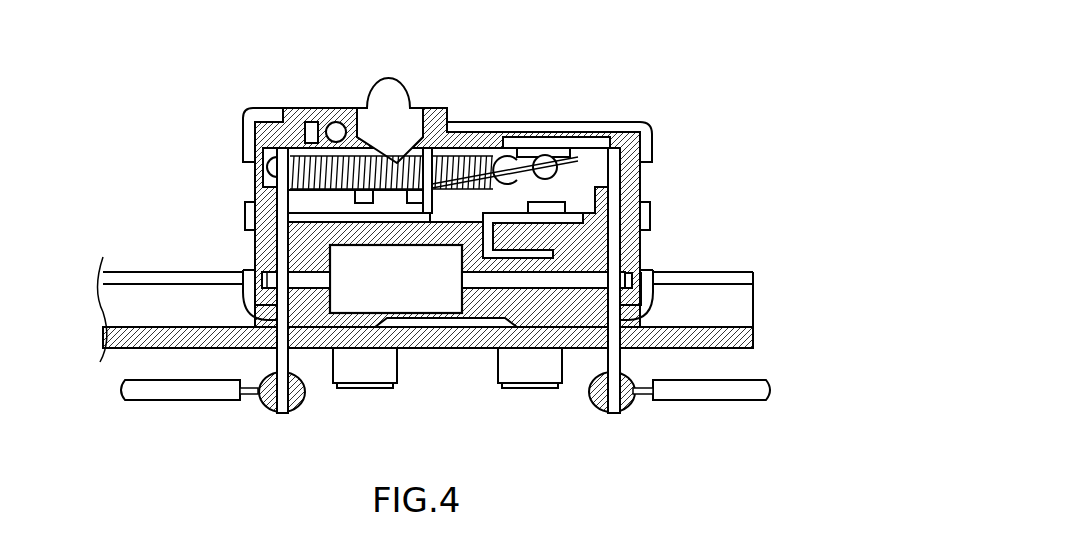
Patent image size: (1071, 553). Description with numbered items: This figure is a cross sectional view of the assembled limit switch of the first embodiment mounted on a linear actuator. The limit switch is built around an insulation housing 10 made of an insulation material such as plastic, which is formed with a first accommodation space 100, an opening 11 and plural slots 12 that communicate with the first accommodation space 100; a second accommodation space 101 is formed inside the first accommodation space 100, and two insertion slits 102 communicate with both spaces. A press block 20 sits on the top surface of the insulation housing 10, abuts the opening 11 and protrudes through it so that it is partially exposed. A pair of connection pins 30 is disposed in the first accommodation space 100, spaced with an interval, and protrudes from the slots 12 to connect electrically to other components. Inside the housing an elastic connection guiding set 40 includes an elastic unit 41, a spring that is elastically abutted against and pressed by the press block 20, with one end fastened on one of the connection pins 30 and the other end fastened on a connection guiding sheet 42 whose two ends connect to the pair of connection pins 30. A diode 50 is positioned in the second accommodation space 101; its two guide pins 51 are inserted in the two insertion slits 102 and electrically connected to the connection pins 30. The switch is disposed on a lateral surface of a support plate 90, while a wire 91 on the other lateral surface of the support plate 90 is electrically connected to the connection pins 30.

The insulation housing 10 is at (577, 118).
The opening 11 is at (430, 108).
The slots 12 is at (290, 297).
The press block 20 is at (388, 98).
The connection pins 30 is at (282, 411).
The elastic connection guiding set 40 is at (463, 152).
The elastic unit 41 is at (340, 172).
The connection guiding sheet 42 is at (527, 158).
The diode 50 is at (427, 293).
The guide pins 51 is at (268, 286).
The support plate 90 is at (743, 338).
The wire 91 is at (165, 393).
The first accommodation space 100 is at (583, 172).
The second accommodation space 101 is at (365, 245).
The insertion slits 102 is at (258, 257).